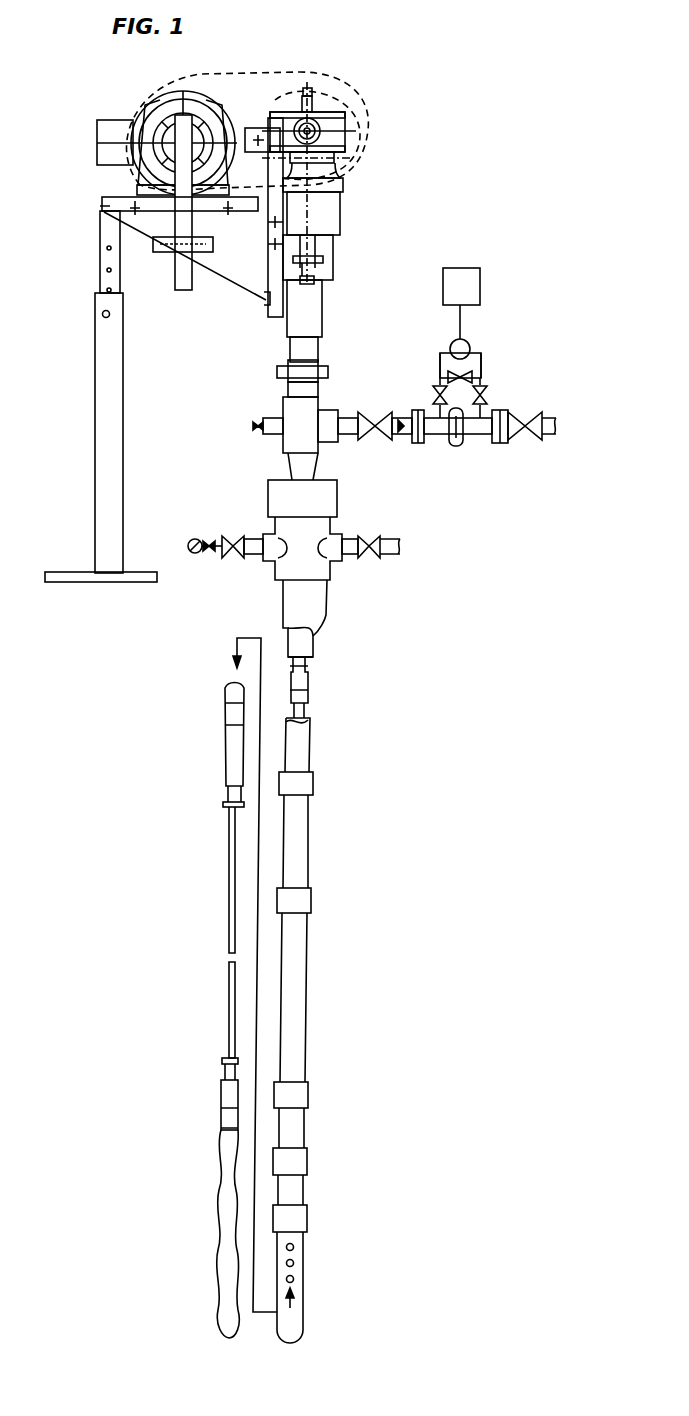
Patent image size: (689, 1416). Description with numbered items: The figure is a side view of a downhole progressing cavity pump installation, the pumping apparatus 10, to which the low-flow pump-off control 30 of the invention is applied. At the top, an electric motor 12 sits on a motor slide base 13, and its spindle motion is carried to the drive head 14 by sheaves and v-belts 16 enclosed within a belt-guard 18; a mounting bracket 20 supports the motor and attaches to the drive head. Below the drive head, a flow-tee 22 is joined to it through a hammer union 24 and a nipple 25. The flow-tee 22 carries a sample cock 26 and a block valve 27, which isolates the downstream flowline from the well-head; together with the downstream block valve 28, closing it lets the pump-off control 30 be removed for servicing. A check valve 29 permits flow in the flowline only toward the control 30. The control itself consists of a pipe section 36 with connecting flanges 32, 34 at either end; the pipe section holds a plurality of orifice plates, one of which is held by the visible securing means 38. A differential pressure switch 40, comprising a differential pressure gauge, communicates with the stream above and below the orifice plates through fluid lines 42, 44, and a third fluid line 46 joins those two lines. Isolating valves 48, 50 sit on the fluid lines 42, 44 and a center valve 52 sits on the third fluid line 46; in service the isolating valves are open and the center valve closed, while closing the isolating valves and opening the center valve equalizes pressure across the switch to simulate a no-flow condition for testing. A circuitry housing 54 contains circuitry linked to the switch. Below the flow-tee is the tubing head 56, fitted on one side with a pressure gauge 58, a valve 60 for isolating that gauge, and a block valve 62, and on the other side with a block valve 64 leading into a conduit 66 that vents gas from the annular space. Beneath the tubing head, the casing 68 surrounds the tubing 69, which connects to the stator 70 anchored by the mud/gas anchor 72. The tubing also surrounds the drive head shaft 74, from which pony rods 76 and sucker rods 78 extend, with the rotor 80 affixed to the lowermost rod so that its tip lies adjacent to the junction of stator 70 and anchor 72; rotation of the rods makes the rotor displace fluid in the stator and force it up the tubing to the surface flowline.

The pumping apparatus 10 is at (450, 108).
The electric motor 12 is at (97, 152).
The motor slide base 13 is at (116, 196).
The drive head 14 is at (340, 218).
The sheaves and v-belts 16 is at (345, 108).
The belt-guard 18 is at (272, 74).
The mounting bracket 20 is at (220, 282).
The flow-tee 22 is at (283, 445).
The hammer union 24 is at (328, 370).
The nipple 25 is at (290, 358).
The sample cock 26 is at (254, 426).
The block valve 27 is at (380, 440).
The downstream block valve 28 is at (526, 440).
The check valve 29 is at (403, 430).
The low-flow pump-off control 30 is at (514, 357).
The connecting flange 32 is at (418, 445).
The connecting flange 34 is at (500, 445).
The pipe section 36 is at (478, 443).
The means for securing one orifice plate 38 is at (454, 448).
The differential pressure switch 40 is at (470, 345).
The fluid line 42 is at (440, 360).
The fluid line 44 is at (482, 356).
The third fluid line 46 is at (482, 370).
The isolating valve 48 is at (434, 395).
The isolating valve 50 is at (486, 396).
The center valve 52 is at (448, 377).
The circuitry housing 54 is at (482, 285).
The tubing head 56 is at (270, 524).
The pressure gauge 58 is at (190, 543).
The valve 60 is at (210, 556).
The block valve 62 is at (237, 560).
The block valve 64 is at (364, 560).
The conduit 66 is at (395, 558).
The casing 68 is at (324, 600).
The tubing 69 is at (310, 822).
The stator 70 is at (308, 965).
The mud/gas anchor 72 is at (305, 1275).
The drive head shaft 74 is at (226, 722).
The pony rods 76 is at (228, 906).
The sucker rods 78 is at (225, 1040).
The rotor 80 is at (218, 1195).